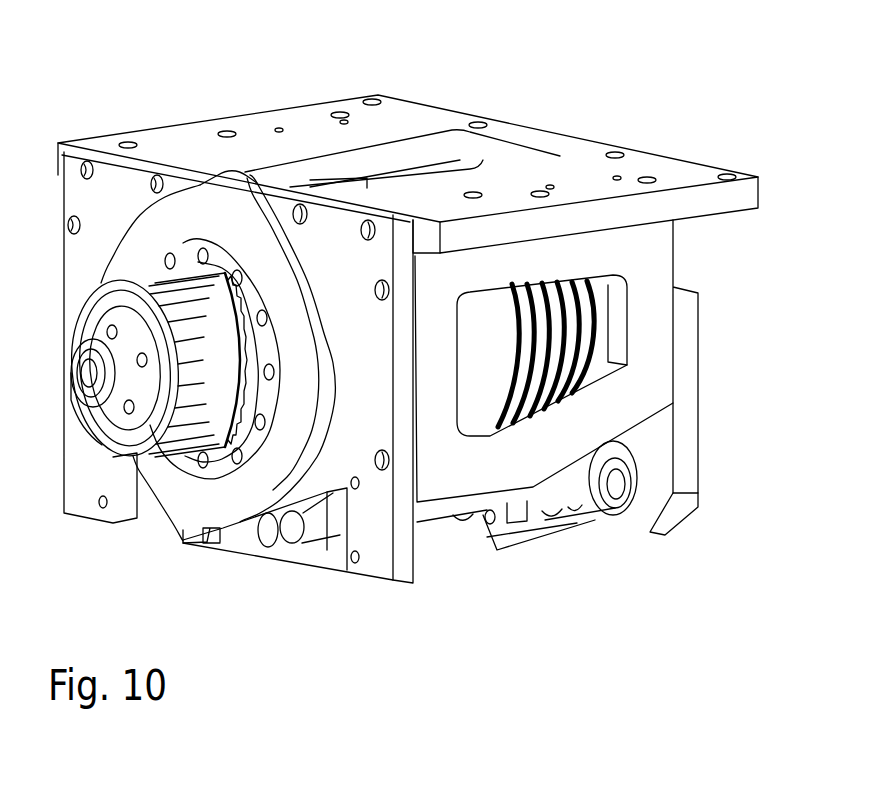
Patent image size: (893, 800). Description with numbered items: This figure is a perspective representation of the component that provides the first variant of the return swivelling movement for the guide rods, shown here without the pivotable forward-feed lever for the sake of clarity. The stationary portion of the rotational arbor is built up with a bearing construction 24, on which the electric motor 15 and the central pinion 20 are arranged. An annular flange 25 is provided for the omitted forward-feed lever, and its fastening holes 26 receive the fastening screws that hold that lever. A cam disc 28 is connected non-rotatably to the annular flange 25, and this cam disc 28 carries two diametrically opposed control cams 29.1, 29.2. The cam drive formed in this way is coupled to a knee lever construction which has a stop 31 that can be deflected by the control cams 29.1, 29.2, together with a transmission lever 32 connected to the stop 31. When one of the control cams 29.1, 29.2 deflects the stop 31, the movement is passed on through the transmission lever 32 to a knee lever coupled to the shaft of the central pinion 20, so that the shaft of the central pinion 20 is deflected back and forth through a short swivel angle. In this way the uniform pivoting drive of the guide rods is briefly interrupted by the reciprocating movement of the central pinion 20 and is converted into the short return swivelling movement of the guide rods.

The electric motor 15 is at (478, 302).
The central pinion 20 is at (150, 287).
The bearing construction 24 is at (497, 117).
The annular flange 25 is at (212, 470).
The fastening holes 26 is at (262, 425).
The cam disc 28 is at (177, 193).
The control cam 29.1 is at (183, 532).
The control cam 29.2 is at (227, 180).
The stop 31 is at (303, 548).
The transmission lever 32 is at (587, 490).